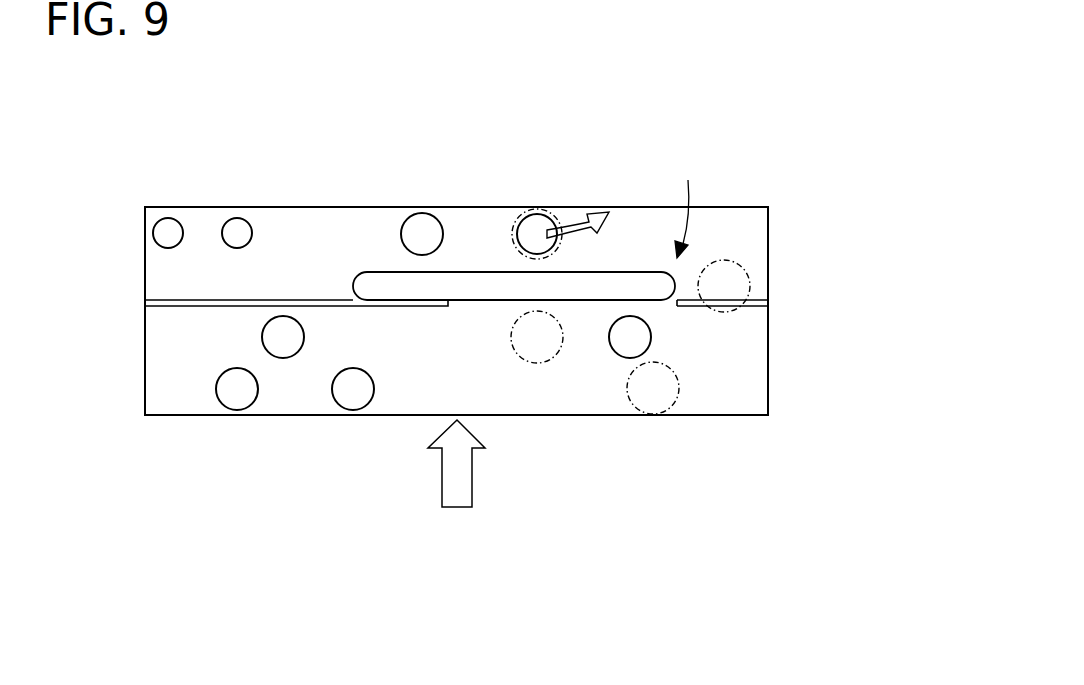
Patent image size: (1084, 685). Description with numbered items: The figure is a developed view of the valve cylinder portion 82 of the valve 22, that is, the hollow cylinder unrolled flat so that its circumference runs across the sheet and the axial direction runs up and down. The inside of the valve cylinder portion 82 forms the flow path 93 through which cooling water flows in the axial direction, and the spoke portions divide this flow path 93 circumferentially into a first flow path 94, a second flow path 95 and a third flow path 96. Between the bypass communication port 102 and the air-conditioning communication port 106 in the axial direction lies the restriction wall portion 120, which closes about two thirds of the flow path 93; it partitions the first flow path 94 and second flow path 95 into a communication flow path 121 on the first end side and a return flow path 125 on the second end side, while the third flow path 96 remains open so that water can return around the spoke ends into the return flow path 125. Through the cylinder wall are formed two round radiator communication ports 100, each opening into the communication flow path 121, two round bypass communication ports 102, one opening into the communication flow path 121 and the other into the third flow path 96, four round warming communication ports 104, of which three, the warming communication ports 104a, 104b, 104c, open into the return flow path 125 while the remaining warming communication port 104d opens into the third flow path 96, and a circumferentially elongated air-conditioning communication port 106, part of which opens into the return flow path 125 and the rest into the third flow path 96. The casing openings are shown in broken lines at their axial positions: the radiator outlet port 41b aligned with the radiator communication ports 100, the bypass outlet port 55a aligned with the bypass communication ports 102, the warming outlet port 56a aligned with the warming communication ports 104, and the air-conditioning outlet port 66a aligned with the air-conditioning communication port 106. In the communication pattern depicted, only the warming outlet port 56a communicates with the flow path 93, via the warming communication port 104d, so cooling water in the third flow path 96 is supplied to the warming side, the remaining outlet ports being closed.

The valve cylinder portion 82 is at (632, 207).
The valve 22 is at (511, 263).
The flow path 93 is at (689, 203).
The first flow path 94 is at (511, 311).
The second flow path 95 is at (511, 311).
The third flow path 96 is at (503, 397).
The radiator communication port 100 is at (250, 378).
The bypass communication port 102 is at (297, 322).
The warming communication port 104 is at (368, 186).
The warming communication port 104a is at (163, 240).
The warming communication port 104b is at (228, 242).
The warming communication port 104c is at (405, 243).
The warming communication port 104d is at (530, 246).
The air-conditioning communication port 106 is at (647, 300).
The restriction wall portion 120 is at (168, 303).
The communication flow path 121 is at (745, 362).
The return flow path 125 is at (745, 232).
The warming outlet port 56a is at (526, 219).
The bypass outlet port 55a is at (540, 318).
The air-conditioning outlet port 66a is at (718, 263).
The radiator outlet port 41b is at (673, 365).